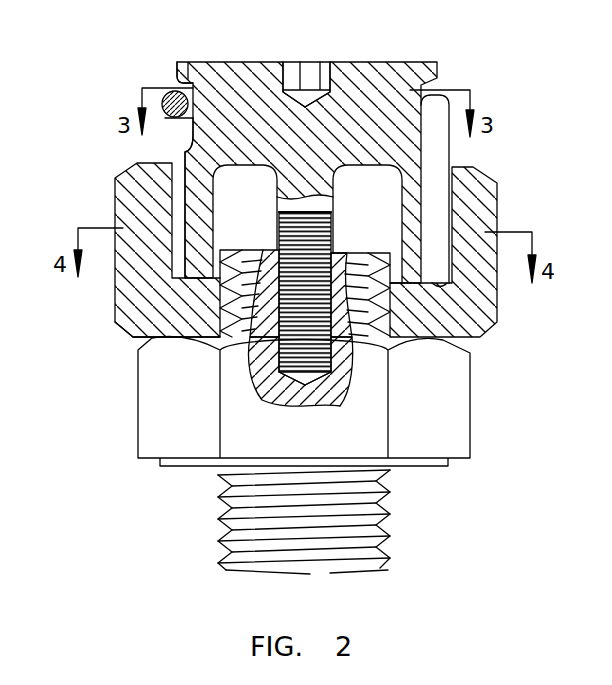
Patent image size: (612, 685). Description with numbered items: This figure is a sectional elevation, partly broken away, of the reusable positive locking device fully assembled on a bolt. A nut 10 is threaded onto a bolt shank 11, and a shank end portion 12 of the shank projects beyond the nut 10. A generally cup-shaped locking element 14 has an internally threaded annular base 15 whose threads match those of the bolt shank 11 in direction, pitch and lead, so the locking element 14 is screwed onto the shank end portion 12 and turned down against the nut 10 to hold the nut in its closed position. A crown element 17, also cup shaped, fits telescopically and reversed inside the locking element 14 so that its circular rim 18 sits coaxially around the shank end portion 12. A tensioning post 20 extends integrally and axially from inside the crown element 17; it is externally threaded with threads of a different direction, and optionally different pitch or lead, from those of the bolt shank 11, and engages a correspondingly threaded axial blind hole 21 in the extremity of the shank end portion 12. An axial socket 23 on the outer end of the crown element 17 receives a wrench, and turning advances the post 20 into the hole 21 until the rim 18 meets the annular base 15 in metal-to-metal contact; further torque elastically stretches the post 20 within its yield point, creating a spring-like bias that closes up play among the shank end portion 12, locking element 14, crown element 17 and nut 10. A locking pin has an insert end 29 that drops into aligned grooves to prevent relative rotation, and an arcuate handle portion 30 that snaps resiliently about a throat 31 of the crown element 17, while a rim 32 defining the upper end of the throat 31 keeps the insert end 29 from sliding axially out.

The nut 10 is at (448, 392).
The bolt shank 11 is at (348, 510).
The shank end portion 12 is at (387, 310).
The locking element 14 is at (112, 334).
The annular base 15 is at (163, 342).
The crown element 17 is at (410, 57).
The circular rim 18 is at (187, 266).
The tensioning post 20 is at (343, 253).
The axial blind hole 21 is at (331, 372).
The axial socket 23 is at (313, 77).
The insert end 29 is at (438, 162).
The arcuate handle portion 30 is at (165, 96).
The throat 31 is at (191, 141).
The rim 32 is at (183, 61).